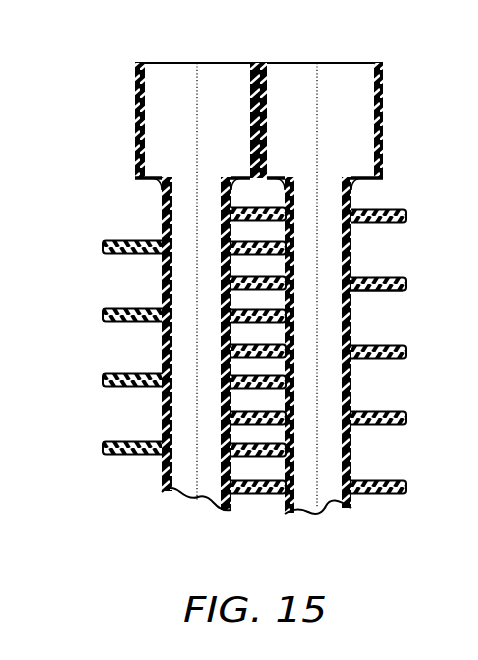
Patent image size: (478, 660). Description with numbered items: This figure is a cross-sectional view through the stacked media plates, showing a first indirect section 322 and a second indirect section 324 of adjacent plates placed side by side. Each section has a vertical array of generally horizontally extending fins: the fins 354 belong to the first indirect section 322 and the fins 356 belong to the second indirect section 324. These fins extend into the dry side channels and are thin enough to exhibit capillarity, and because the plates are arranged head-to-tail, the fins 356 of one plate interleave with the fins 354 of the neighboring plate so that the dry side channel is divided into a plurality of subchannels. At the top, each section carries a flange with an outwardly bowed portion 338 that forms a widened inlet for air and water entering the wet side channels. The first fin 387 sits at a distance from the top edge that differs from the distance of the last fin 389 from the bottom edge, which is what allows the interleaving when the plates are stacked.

The first indirect section 322 is at (98, 192).
The outwardly bowed portion 338 is at (252, 75).
The fins 354 is at (406, 218).
The first fin 387 is at (390, 277).
The last fin 389 is at (372, 292).
The second indirect section 324 is at (275, 502).
The fins 356 is at (243, 297).